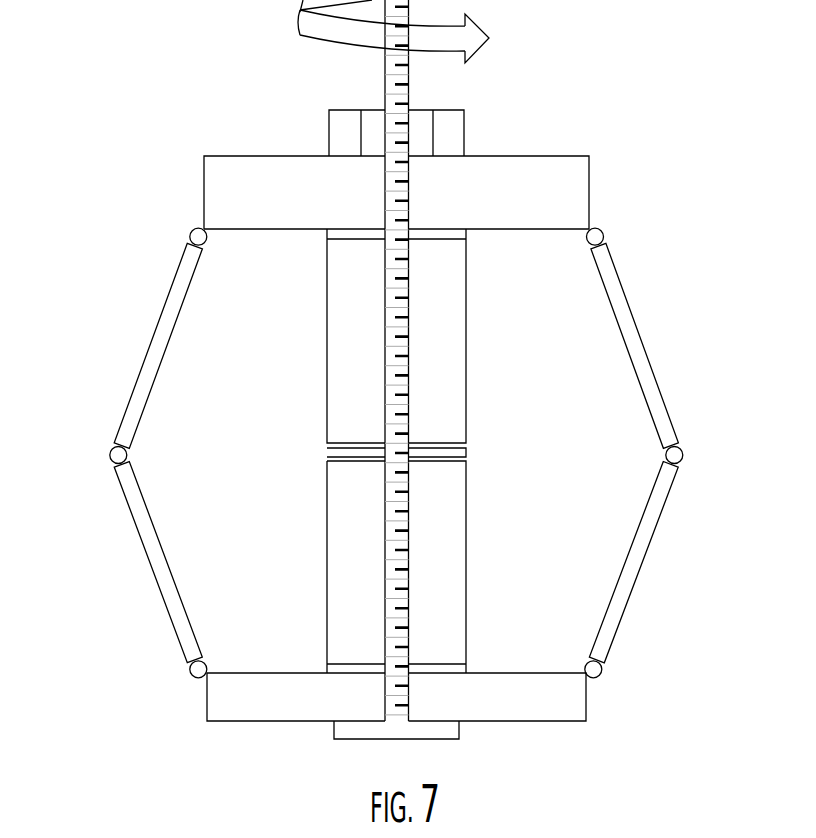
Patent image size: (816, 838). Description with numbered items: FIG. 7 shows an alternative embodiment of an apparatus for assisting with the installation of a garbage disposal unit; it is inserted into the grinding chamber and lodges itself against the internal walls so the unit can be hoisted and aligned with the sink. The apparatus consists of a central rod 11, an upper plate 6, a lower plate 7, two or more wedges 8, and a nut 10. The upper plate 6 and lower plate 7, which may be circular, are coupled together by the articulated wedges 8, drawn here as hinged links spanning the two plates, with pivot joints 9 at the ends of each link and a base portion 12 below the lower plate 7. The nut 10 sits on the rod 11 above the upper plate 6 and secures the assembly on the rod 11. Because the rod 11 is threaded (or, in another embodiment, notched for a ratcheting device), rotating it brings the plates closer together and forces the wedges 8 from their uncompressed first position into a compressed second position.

The upper plate 6 is at (260, 155).
The lower plate 7 is at (208, 697).
The wedges 8 is at (138, 362).
The hinge pin 9 is at (108, 448).
The nut 10 is at (465, 137).
The rod 11 is at (383, 352).
The base plate 12 is at (588, 700).